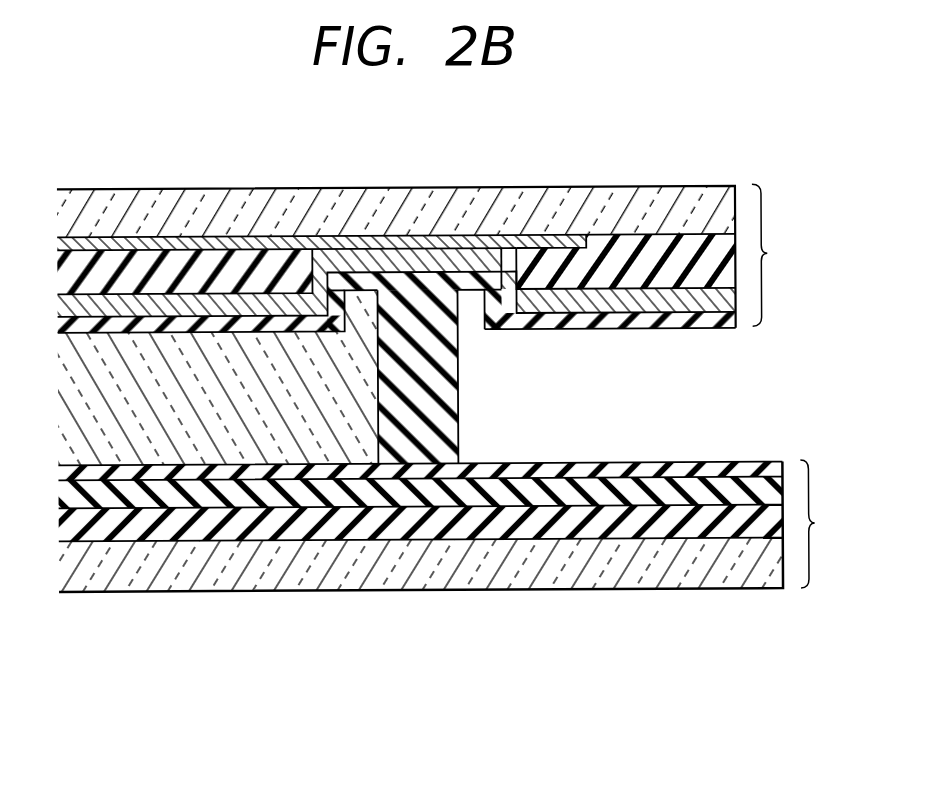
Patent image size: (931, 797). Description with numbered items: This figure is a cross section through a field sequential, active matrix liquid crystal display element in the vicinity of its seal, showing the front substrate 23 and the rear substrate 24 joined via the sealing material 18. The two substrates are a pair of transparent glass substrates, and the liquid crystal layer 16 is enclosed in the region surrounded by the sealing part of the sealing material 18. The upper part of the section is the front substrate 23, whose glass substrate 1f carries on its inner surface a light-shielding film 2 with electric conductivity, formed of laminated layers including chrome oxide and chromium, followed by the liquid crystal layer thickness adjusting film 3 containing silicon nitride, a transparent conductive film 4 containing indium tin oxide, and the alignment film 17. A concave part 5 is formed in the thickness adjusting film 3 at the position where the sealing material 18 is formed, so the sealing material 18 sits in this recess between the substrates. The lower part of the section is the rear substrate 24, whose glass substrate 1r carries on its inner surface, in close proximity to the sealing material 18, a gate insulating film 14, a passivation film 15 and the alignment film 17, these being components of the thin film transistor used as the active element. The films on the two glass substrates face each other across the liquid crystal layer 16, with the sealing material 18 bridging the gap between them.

The glass substrate 1f is at (186, 212).
The glass substrate 1r is at (213, 578).
The light-shielding film 2 is at (352, 247).
The liquid crystal layer thickness adjusting film 3 is at (268, 265).
The transparent conductive film 4 is at (643, 302).
The concave part 5 is at (473, 298).
The gate insulating film 14 is at (535, 528).
The passivation film 15 is at (648, 497).
The liquid crystal layer 16 is at (120, 382).
The alignment film 17 is at (710, 322).
The sealing material 18 is at (412, 328).
The front substrate 23 is at (428, 278).
The rear substrate 24 is at (453, 582).